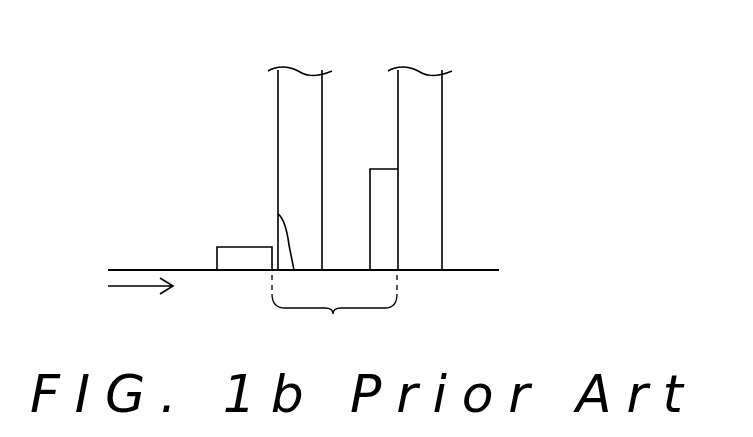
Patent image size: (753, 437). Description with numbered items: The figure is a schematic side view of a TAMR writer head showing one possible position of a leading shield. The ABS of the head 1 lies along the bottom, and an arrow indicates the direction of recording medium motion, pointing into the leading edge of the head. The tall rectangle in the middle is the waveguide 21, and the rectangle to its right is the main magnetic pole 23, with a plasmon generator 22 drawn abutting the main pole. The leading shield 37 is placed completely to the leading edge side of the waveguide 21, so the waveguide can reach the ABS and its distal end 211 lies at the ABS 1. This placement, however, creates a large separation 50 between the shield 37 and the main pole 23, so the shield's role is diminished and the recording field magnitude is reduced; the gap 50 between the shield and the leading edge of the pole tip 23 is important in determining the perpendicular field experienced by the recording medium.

The ABS of the head 1 is at (459, 271).
The waveguide 21 is at (300, 82).
The distal end of the waveguide 211 is at (278, 214).
The plasmon generator 22 is at (380, 180).
The main magnetic pole 23 is at (418, 82).
The leading shield 37 is at (244, 258).
The separation between the shield and the main pole 50 is at (334, 310).